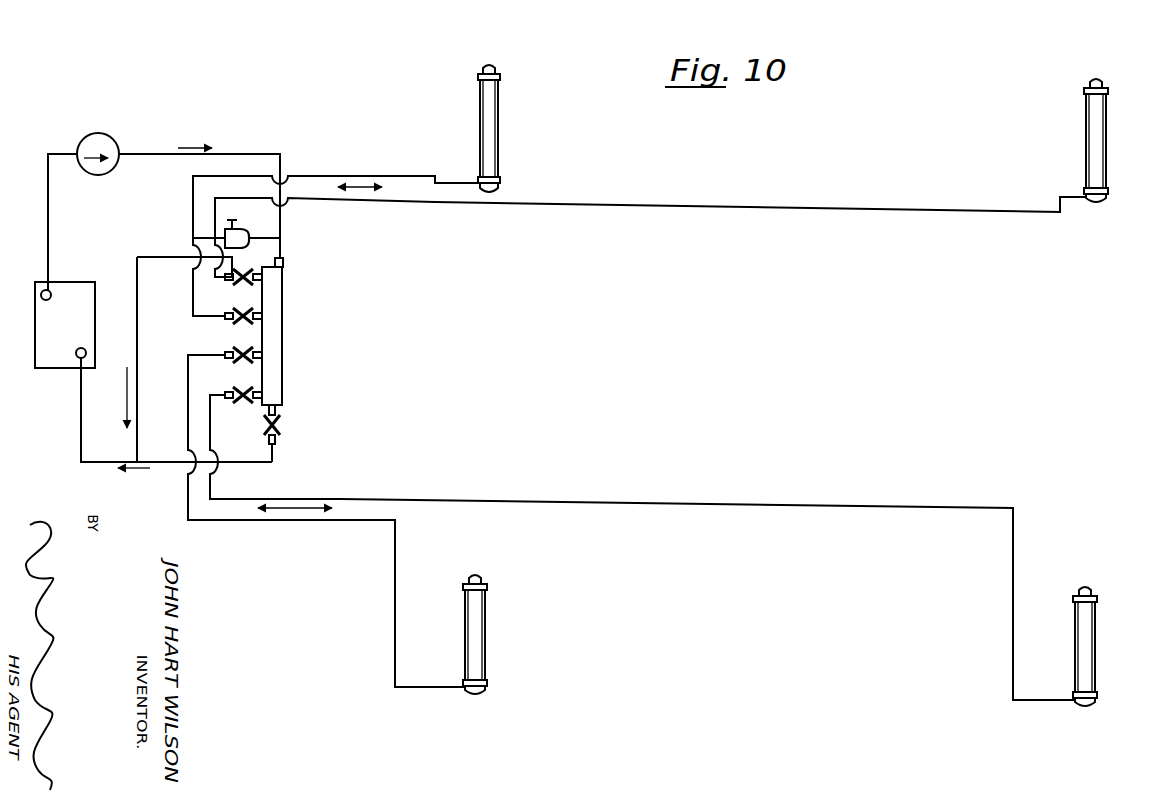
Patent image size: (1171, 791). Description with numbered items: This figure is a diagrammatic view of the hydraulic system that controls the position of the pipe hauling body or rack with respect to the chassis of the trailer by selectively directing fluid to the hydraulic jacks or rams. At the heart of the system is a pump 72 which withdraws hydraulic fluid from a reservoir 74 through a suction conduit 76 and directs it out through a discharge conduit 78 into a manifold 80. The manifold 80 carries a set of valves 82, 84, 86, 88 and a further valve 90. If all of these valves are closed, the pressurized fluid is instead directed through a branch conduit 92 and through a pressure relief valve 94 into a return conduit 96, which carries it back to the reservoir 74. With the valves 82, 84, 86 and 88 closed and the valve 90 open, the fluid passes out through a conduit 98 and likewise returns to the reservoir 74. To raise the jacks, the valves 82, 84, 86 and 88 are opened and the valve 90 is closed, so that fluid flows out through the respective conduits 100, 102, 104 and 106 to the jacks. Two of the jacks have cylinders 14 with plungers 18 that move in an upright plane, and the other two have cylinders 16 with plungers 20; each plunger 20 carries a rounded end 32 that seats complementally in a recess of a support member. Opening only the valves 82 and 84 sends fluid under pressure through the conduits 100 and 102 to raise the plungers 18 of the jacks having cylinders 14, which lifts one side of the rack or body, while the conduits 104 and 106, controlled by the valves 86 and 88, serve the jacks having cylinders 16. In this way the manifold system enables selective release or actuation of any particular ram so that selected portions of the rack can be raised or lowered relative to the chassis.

The cylinder 14 is at (478, 627).
The cylinder 16 is at (482, 104).
The plunger 18 is at (478, 575).
The plunger 20 is at (483, 71).
The rounded end 32 is at (498, 192).
The pump 72 is at (117, 142).
The reservoir 74 is at (66, 282).
The suction conduit 76 is at (50, 230).
The discharge conduit 78 is at (258, 150).
The manifold 80 is at (282, 333).
The valve 82 is at (244, 400).
The valve 84 is at (236, 361).
The valve 86 is at (236, 321).
The valve 88 is at (236, 282).
The valve 90 is at (282, 424).
The branch conduit 92 is at (256, 236).
The pressure relief valve 94 is at (195, 238).
The return conduit 96 is at (137, 305).
The conduit 98 is at (252, 463).
The conduit 100 is at (343, 499).
The conduit 102 is at (290, 522).
The conduit 104 is at (318, 175).
The conduit 106 is at (318, 202).